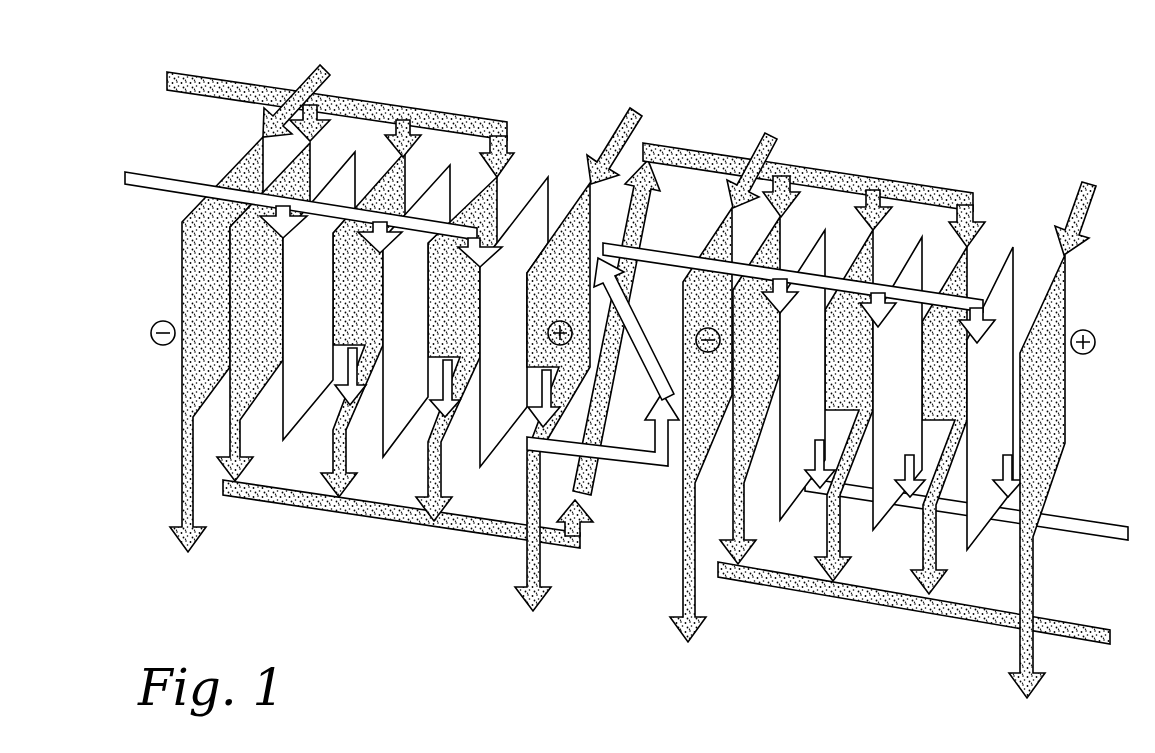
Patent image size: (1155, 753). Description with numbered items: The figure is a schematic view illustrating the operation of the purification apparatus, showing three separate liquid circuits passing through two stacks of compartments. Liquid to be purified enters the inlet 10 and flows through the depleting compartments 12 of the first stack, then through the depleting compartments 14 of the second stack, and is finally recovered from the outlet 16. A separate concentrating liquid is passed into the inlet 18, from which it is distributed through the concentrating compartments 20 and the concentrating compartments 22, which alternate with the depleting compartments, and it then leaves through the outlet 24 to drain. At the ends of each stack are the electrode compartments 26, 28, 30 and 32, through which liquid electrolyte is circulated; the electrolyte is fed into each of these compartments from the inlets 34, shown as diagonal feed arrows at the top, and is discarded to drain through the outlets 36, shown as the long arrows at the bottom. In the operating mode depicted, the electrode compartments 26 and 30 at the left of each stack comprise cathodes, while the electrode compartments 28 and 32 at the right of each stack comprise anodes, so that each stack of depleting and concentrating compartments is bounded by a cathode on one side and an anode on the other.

The inlet 10 is at (171, 187).
The depleting compartments 12 is at (297, 310).
The depleting compartments 14 is at (796, 385).
The outlet 16 is at (1073, 515).
The inlet 18 is at (235, 83).
The concentrating compartments 20 is at (241, 310).
The concentrating compartments 22 is at (743, 385).
The outlet 24 is at (1063, 617).
The electrode compartment 26 is at (194, 310).
The electrode compartment 28 is at (552, 310).
The electrode compartment 30 is at (696, 385).
The electrode compartment 32 is at (1031, 385).
The inlets 34 is at (333, 74).
The outlets 36 is at (205, 546).